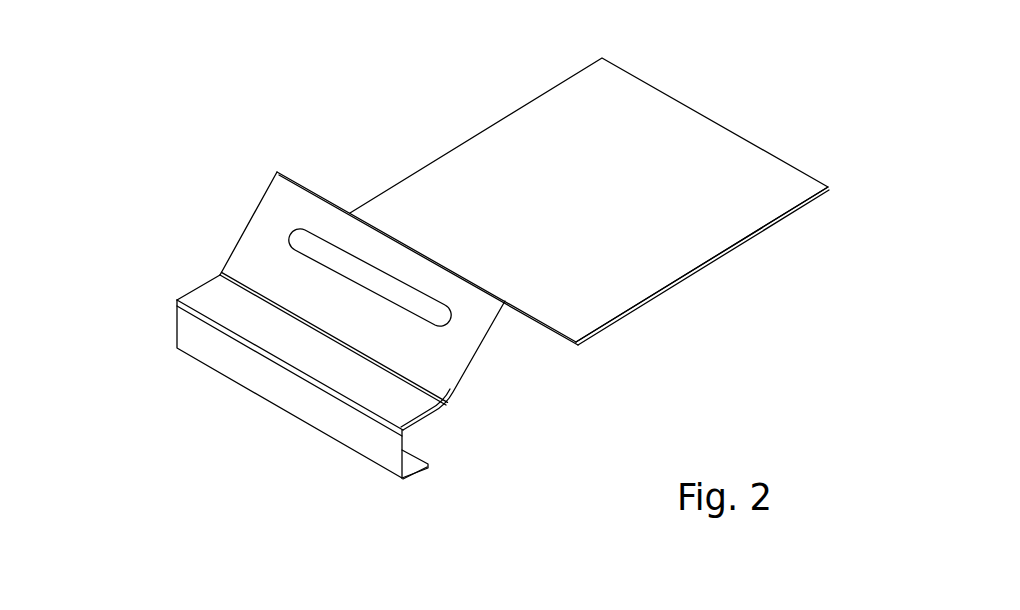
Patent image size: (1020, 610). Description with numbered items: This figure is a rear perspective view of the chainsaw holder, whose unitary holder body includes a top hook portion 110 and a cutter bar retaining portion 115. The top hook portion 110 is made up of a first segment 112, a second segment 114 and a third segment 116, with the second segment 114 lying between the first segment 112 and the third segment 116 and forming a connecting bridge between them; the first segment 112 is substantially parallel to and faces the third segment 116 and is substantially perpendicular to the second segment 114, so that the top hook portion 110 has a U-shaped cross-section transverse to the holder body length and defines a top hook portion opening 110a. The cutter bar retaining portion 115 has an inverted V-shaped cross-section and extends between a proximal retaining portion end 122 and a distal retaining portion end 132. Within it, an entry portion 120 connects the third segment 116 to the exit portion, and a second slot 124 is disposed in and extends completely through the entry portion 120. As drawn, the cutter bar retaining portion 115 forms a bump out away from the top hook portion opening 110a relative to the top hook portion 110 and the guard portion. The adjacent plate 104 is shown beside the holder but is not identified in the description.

The panel 104 is at (617, 230).
The top hook portion 110 is at (343, 428).
The top hook portion opening 110a is at (417, 442).
The first segment 112 is at (417, 476).
The second segment 114 is at (362, 433).
The cutter bar retaining portion 115 is at (277, 172).
The third segment 116 is at (403, 402).
The entry portion 120 is at (327, 267).
The proximal retaining portion end 122 is at (257, 287).
The second slot 124 is at (306, 242).
The distal retaining portion end 132 is at (573, 337).